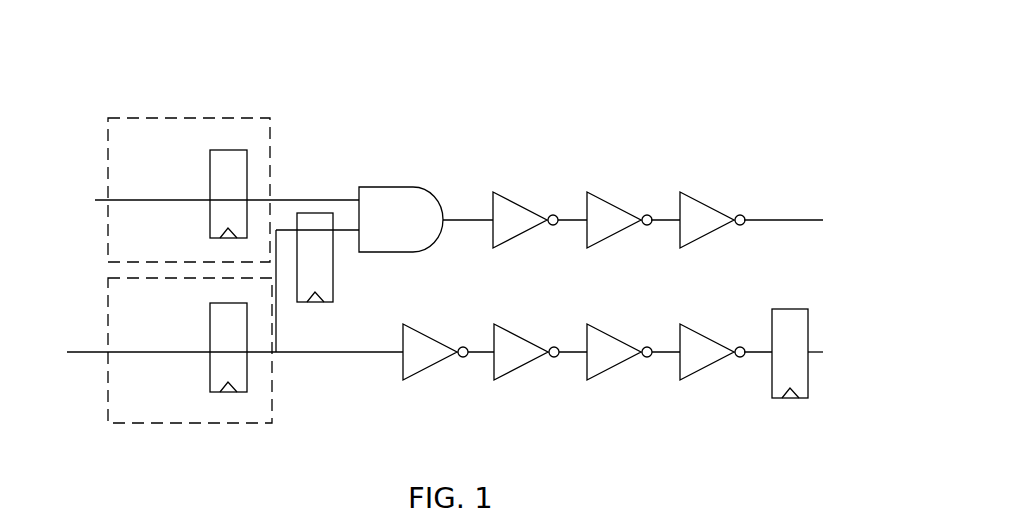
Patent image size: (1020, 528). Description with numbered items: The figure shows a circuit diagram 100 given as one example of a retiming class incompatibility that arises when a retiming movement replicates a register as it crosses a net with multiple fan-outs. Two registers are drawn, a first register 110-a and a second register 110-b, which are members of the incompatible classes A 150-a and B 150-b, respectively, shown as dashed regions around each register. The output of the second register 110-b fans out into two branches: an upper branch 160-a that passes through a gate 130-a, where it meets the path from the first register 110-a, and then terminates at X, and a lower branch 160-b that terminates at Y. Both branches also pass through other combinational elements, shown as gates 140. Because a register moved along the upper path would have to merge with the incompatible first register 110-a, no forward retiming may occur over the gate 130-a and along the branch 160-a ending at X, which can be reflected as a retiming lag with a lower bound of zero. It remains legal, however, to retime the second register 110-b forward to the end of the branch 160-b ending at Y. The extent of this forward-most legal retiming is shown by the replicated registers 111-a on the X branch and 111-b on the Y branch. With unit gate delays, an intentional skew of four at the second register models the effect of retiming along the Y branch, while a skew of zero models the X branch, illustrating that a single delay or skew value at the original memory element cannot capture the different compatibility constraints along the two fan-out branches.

The circuit diagram 100 is at (274, 47).
The register R1 110-a is at (210, 218).
The register R2 110-b is at (210, 372).
The register R'2x 111-a is at (333, 283).
The register R'2y 111-b is at (808, 383).
The gate 130-a is at (426, 190).
The gates 140 is at (637, 157).
The class A 150-a is at (96, 226).
The class B 150-b is at (97, 373).
The branch terminating at X 160-a is at (841, 184).
The branch terminating at Y 160-b is at (827, 312).